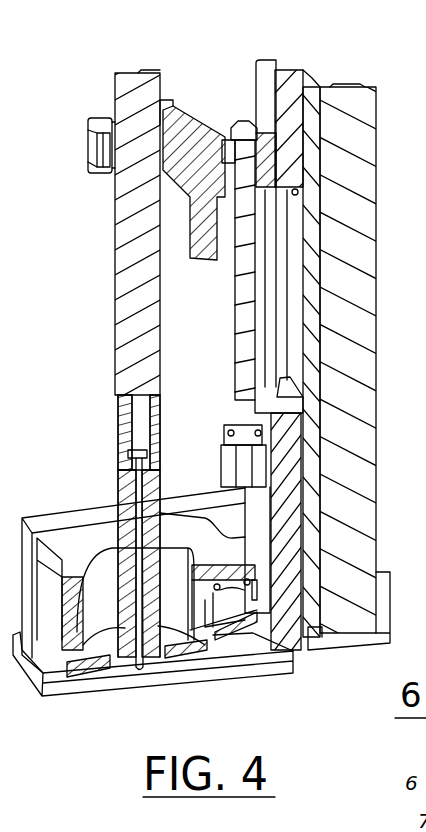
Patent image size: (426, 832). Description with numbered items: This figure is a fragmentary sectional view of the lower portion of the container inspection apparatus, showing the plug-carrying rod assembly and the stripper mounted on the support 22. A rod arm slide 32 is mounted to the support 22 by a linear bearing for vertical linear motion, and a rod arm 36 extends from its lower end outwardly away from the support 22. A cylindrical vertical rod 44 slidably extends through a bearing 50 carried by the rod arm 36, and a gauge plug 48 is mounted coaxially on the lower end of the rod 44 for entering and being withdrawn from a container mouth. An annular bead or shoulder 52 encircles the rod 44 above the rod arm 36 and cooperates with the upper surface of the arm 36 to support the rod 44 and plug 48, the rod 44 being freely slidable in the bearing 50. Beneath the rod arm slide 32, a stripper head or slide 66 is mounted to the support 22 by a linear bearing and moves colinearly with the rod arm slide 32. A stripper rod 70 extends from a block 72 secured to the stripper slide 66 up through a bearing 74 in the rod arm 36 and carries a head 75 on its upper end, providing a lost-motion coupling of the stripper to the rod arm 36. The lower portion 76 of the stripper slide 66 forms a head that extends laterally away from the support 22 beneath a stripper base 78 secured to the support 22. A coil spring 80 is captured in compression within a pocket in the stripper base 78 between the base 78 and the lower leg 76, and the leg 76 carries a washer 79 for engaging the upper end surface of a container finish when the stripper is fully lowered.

The support 22 is at (368, 183).
The rod arm slide 32 is at (286, 90).
The rod arm 36 is at (190, 130).
The vertical rod 44 is at (125, 312).
The gauge plug 48 is at (130, 590).
The bearing 50 is at (100, 172).
The annular bead or shoulder 52 is at (100, 120).
The stripper head or slide 66 is at (295, 527).
The stripper rod 70 is at (242, 292).
The block 72 is at (228, 470).
The bearing 74 is at (303, 107).
The head 75 is at (237, 121).
The lower portion (leg) of stripper slide 76 is at (42, 696).
The stripper base 78 is at (40, 525).
The washer 79 is at (180, 656).
The coil spring 80 is at (262, 615).